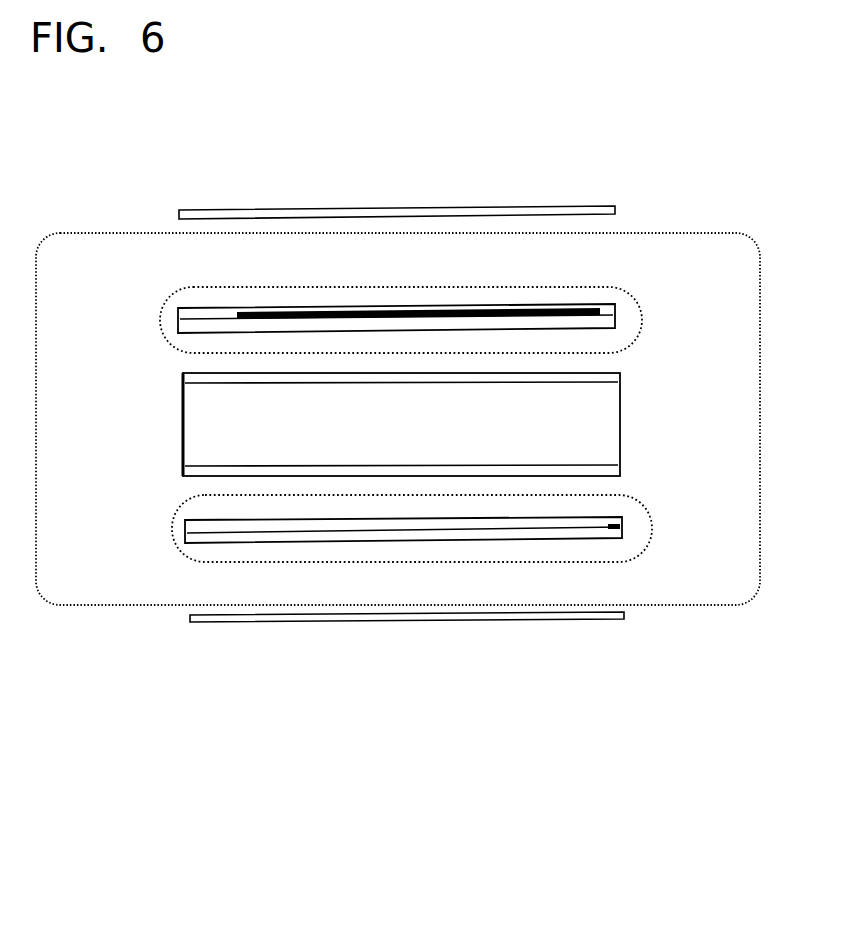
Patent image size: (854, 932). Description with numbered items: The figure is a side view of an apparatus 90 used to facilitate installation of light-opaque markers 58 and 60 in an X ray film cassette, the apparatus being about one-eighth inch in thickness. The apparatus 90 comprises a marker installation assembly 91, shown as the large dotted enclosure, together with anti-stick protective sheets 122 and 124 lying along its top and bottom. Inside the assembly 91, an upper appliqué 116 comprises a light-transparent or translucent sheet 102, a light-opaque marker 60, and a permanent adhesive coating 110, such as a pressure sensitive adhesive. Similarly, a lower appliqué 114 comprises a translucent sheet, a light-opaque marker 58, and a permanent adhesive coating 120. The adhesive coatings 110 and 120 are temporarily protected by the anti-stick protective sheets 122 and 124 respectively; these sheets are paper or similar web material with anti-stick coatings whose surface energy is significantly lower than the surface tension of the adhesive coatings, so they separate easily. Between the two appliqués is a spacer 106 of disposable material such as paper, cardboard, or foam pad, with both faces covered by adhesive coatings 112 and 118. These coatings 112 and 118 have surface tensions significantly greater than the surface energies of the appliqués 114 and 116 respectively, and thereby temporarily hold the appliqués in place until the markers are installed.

The apparatus 90 is at (398, 475).
The marker installation assembly 91 is at (133, 606).
The anti-stick protective sheet 122 is at (373, 210).
The anti-stick protective sheet 124 is at (413, 622).
The appliqué 116 is at (160, 319).
The appliqué 114 is at (172, 530).
The light-opaque marker 60 is at (455, 287).
The adhesive coating 110 is at (573, 306).
The light-transparent or translucent sheet 102 is at (607, 323).
The spacer 106 is at (467, 426).
The adhesive coating 112 is at (603, 372).
The adhesive coating 118 is at (605, 467).
The light-opaque marker 58 is at (465, 560).
The adhesive coating 120 is at (580, 540).